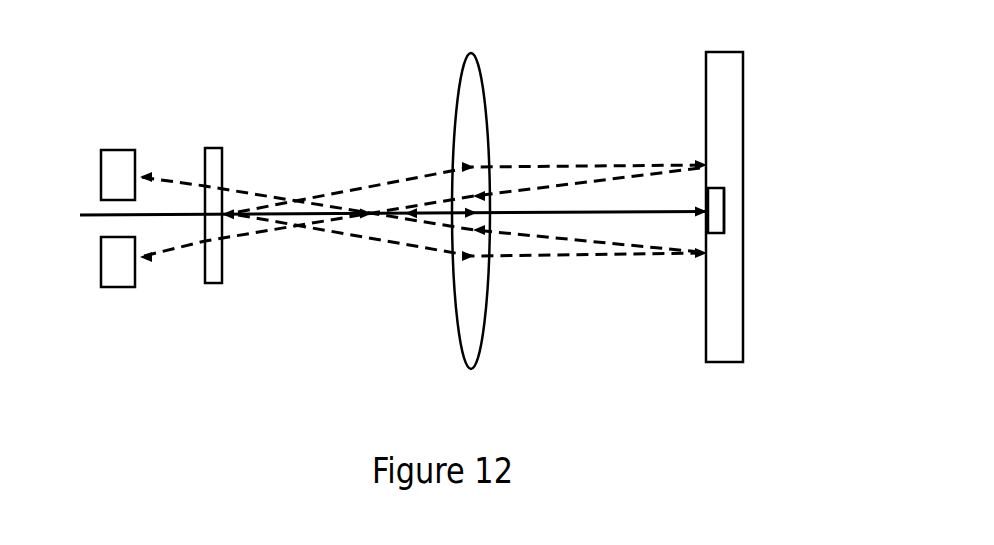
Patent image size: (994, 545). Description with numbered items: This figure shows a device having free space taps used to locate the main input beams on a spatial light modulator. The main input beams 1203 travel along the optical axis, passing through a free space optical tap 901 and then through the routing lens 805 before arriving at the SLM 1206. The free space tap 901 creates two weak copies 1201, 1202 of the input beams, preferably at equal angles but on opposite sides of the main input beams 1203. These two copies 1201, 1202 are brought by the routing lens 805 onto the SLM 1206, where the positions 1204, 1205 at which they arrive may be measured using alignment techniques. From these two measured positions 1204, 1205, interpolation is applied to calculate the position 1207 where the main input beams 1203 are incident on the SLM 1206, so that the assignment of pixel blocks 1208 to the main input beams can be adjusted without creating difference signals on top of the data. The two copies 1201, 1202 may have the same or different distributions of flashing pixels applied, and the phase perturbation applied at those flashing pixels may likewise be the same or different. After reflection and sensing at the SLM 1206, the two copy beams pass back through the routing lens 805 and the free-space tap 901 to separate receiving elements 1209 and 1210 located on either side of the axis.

The routing lens 805 is at (463, 128).
The free space optical tap 901 is at (215, 288).
The first copy of the input beams 1201 is at (338, 187).
The second copy of the input beams 1202 is at (408, 258).
The main input beams 1203 is at (605, 215).
The position of first copy beam on SLM 1204 is at (708, 165).
The position of second copy beam on SLM 1205 is at (708, 253).
The SLM 1206 is at (722, 108).
The position of main input beams on SLM 1207 is at (712, 208).
The pixel blocks 1208 is at (725, 226).
The first receiving element 1209 is at (122, 262).
The second receiving element 1210 is at (115, 177).